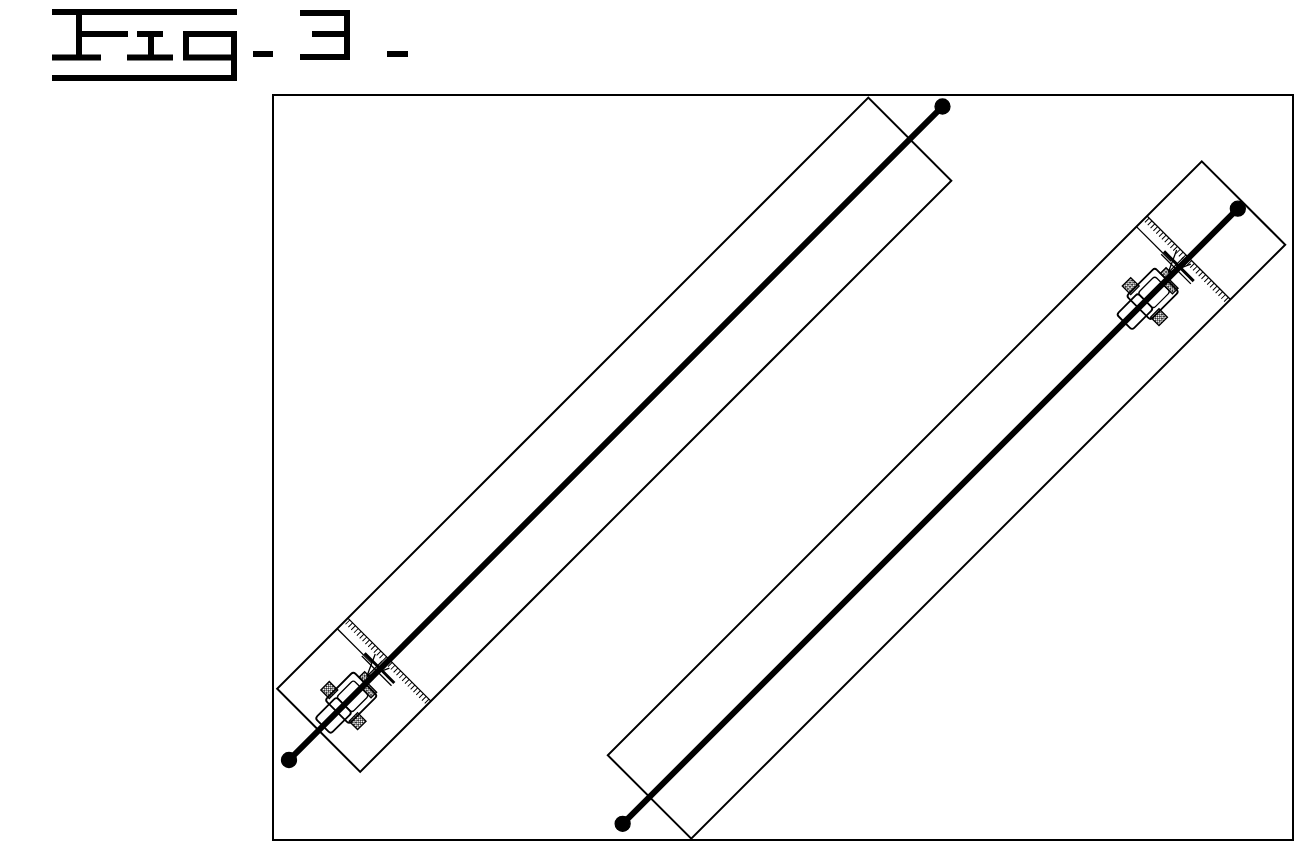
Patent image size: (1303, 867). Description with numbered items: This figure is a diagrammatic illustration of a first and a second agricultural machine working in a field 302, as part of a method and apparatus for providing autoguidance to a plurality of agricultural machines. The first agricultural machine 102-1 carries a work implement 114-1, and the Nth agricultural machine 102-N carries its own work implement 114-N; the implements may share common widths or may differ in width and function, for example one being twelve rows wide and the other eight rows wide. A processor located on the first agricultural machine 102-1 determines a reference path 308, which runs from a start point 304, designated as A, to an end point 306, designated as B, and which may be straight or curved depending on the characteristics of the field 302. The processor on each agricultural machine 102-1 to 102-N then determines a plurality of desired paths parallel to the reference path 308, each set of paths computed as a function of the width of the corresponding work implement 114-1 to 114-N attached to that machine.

The field 302 is at (677, 95).
The start point 304 is at (937, 99).
The end point 306 is at (284, 759).
The reference path 308 is at (533, 511).
The work implement 114-1 is at (397, 566).
The work implement 114-N is at (1143, 222).
The first agricultural machine 102-1 is at (362, 722).
The Nth agricultural machine 102-N is at (1140, 280).